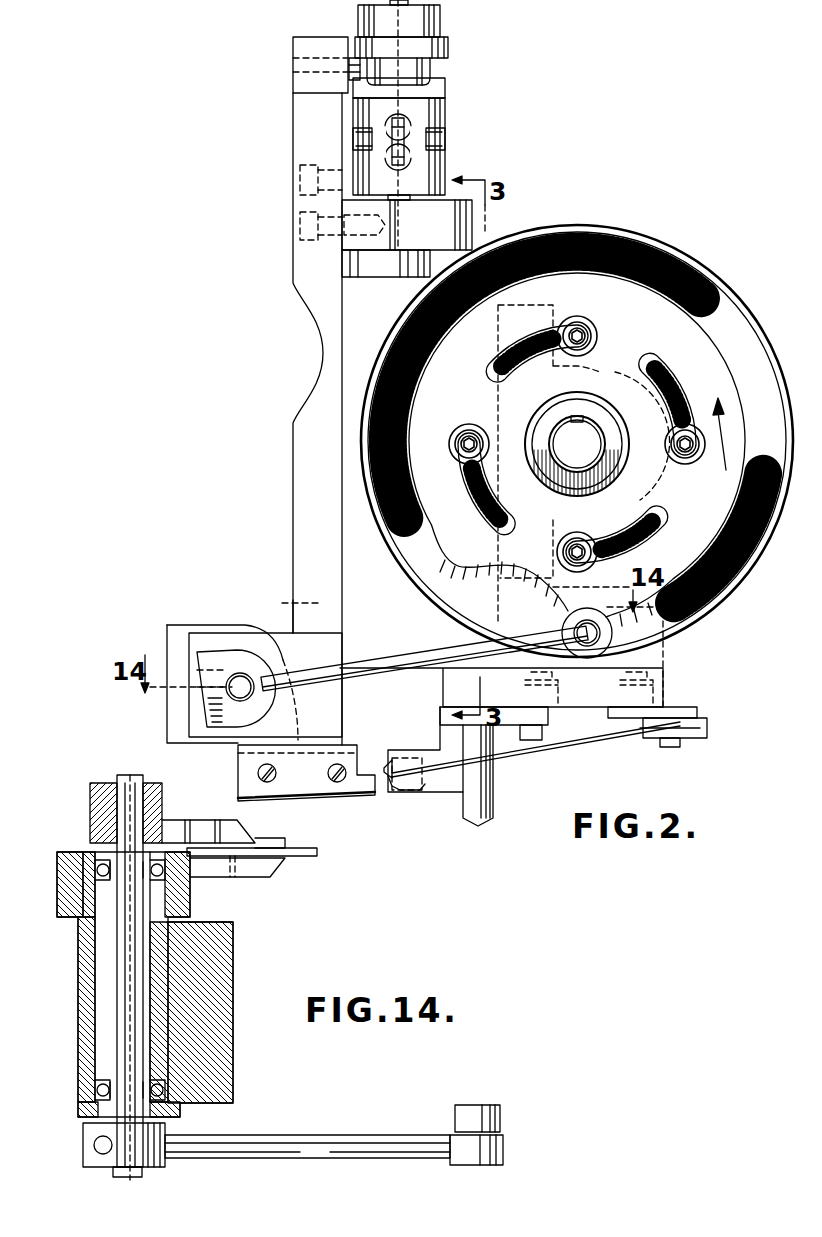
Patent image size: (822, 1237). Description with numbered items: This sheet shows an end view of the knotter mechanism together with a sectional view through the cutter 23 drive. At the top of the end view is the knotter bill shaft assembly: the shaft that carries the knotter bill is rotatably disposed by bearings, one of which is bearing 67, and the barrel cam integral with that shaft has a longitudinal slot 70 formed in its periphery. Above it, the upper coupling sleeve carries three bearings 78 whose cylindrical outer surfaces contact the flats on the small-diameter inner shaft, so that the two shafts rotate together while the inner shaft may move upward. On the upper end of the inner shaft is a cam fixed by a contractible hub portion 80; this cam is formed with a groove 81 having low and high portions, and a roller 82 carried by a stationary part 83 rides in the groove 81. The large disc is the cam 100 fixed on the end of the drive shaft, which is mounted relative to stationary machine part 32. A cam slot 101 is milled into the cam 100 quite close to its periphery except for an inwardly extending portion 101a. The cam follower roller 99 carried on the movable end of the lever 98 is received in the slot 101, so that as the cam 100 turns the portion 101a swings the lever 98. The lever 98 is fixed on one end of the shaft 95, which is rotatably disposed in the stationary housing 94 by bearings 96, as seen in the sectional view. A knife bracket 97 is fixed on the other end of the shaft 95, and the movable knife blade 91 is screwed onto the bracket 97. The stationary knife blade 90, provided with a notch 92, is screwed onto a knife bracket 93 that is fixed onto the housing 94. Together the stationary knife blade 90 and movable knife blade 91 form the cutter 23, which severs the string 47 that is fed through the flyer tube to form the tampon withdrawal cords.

In FIG. 2, the contractible hub portion 80 is at (440, 19).
In FIG. 2, the groove 81 is at (432, 63).
In FIG. 2, the roller 82 is at (349, 70).
In FIG. 2, the stationary part 83 is at (293, 50).
In FIG. 2, the bearings 78 is at (410, 125).
In FIG. 2, the longitudinal slot 70 is at (447, 172).
In FIG. 2, the bearing 67 is at (460, 246).
In FIG. 2, the cam 100 is at (660, 248).
In FIG. 2, the cam slot 101 is at (718, 306).
In FIG. 2, the inwardly extending portion 101a is at (520, 578).
In FIG. 2, the stationary machine part 32 is at (614, 372).
In FIG. 2, the lever 98 is at (416, 652).
In FIG. 14, the lever 98 is at (342, 1134).
In FIG. 2, the stationary knife blade 90 is at (412, 755).
In FIG. 14, the stationary knife blade 90 is at (276, 870).
In FIG. 2, the movable knife blade 91 is at (385, 795).
In FIG. 14, the movable knife blade 91 is at (262, 840).
In FIG. 2, the notch 92 is at (412, 781).
In FIG. 2, the string 47 is at (560, 750).
In FIG. 14, the knife bracket 97 is at (162, 800).
In FIG. 14, the cutter 23 is at (300, 848).
In FIG. 14, the knife bracket 93 is at (213, 880).
In FIG. 14, the shaft 95 is at (136, 981).
In FIG. 14, the stationary housing 94 is at (233, 1020).
In FIG. 14, the bearings 96 is at (180, 1104).
In FIG. 14, the cam follower roller 99 is at (478, 1106).